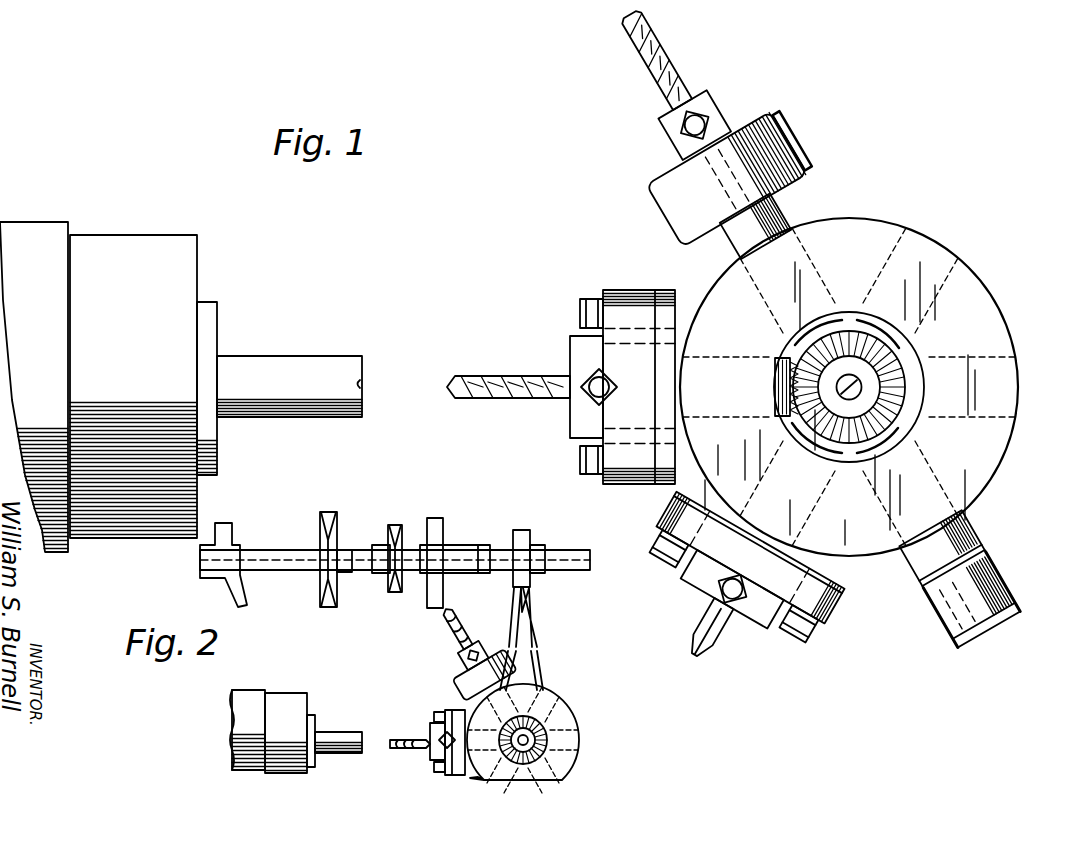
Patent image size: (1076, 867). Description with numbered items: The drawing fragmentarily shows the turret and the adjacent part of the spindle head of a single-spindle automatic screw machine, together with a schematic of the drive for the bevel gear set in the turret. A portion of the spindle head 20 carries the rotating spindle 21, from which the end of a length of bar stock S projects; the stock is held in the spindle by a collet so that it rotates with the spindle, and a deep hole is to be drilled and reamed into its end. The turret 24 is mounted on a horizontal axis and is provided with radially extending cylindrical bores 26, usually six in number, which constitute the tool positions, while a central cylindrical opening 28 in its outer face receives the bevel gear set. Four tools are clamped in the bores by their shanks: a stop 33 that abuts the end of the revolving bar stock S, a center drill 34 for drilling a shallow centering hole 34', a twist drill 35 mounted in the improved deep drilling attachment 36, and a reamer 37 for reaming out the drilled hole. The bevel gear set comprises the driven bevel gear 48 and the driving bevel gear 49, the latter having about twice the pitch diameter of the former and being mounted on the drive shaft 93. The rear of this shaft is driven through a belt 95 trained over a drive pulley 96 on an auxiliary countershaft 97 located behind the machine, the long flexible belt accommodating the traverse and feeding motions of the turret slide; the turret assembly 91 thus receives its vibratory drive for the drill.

In FIG. 1, the spindle head 20 is at (28, 232).
In FIG. 2, the spindle head 20 is at (246, 696).
In FIG. 1, the spindle 21 is at (215, 303).
In FIG. 2, the spindle 21 is at (315, 715).
In FIG. 1, the bar stock S is at (298, 368).
In FIG. 2, the bar stock S is at (347, 740).
In FIG. 1, the centering hole 34' is at (382, 359).
In FIG. 1, the turret 24 is at (862, 230).
In FIG. 1, the radially extending cylindrical bores 26 is at (910, 360).
In FIG. 1, the central cylindrical opening 28 is at (876, 333).
In FIG. 1, the driven bevel gear 48 is at (790, 368).
In FIG. 1, the driving bevel gear 49 is at (893, 355).
In FIG. 1, the drive shaft 93 is at (860, 388).
In FIG. 2, the drive shaft 93 is at (547, 740).
In FIG. 1, the deep drilling attachment 36 is at (564, 333).
In FIG. 2, the deep drilling attachment 36 is at (445, 712).
In FIG. 1, the twist drill 35 is at (483, 400).
In FIG. 2, the twist drill 35 is at (405, 739).
In FIG. 1, the reamer 37 is at (655, 70).
In FIG. 1, the stop 33 is at (1012, 597).
In FIG. 1, the center drill 34 is at (727, 597).
In FIG. 1, the drive pulley 96 is at (532, 580).
In FIG. 1, the auxiliary countershaft 97 is at (570, 553).
In FIG. 2, the belt 95 is at (538, 662).
In FIG. 2, the turret 91 is at (560, 715).